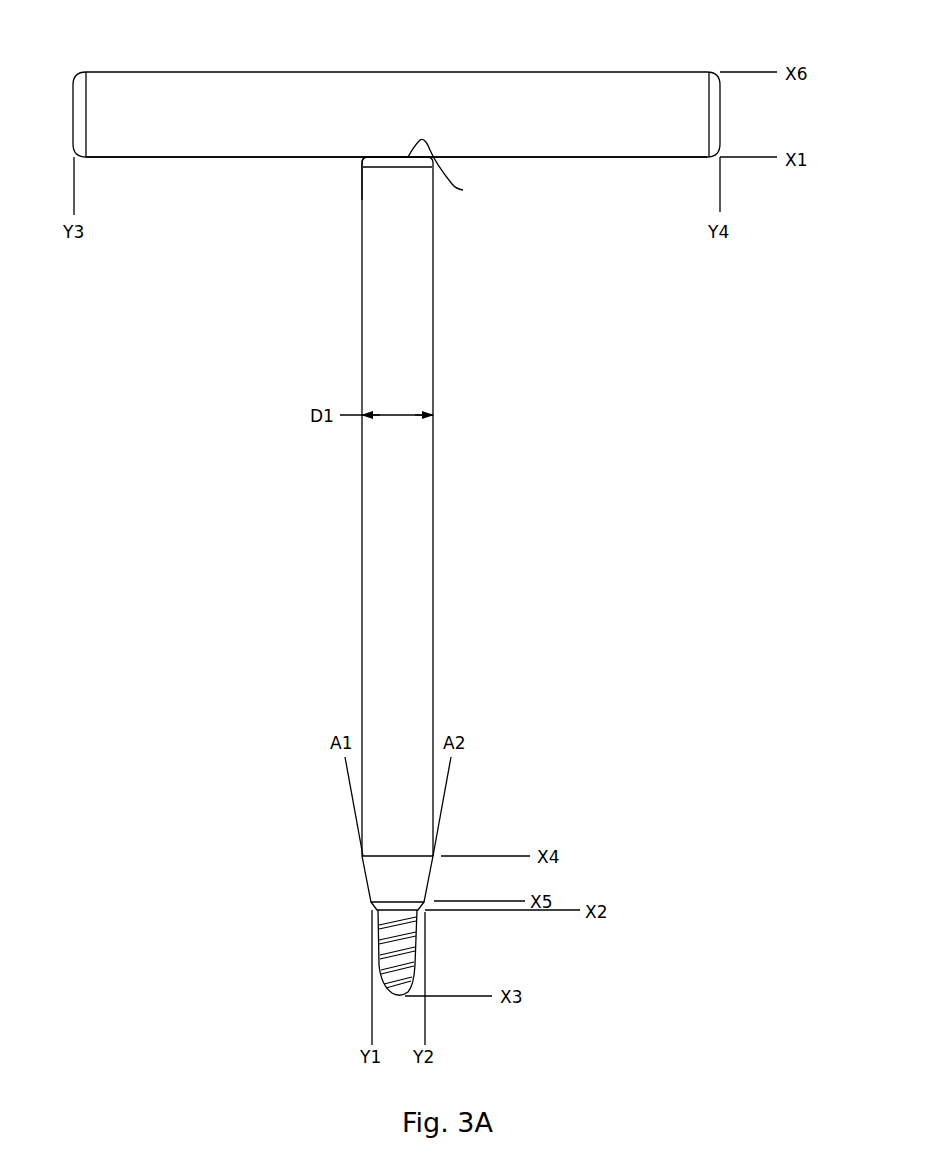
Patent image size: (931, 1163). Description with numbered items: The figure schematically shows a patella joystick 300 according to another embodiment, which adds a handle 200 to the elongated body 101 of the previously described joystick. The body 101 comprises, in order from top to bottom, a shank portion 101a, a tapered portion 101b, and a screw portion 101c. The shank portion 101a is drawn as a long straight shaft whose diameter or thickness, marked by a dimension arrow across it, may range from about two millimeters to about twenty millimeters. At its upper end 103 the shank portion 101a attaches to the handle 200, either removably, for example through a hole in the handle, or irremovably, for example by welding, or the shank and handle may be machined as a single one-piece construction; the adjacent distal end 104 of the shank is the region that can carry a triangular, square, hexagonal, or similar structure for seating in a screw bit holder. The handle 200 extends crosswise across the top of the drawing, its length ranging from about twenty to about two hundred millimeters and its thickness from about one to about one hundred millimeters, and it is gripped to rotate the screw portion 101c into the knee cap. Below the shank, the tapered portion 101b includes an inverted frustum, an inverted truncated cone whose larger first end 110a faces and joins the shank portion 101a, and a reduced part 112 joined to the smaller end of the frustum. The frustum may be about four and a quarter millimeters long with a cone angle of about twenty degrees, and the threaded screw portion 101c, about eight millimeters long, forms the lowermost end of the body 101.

The patella joystick 300 is at (630, 57).
The handle 200 is at (527, 172).
The elongated body 101 is at (340, 573).
The shank portion 101a is at (352, 262).
The tapered portion 101b is at (336, 886).
The screw portion 101c is at (352, 977).
The end 103 is at (456, 170).
The distal end 104 is at (362, 190).
The first end 110a is at (363, 856).
The reduced part 112 is at (372, 905).